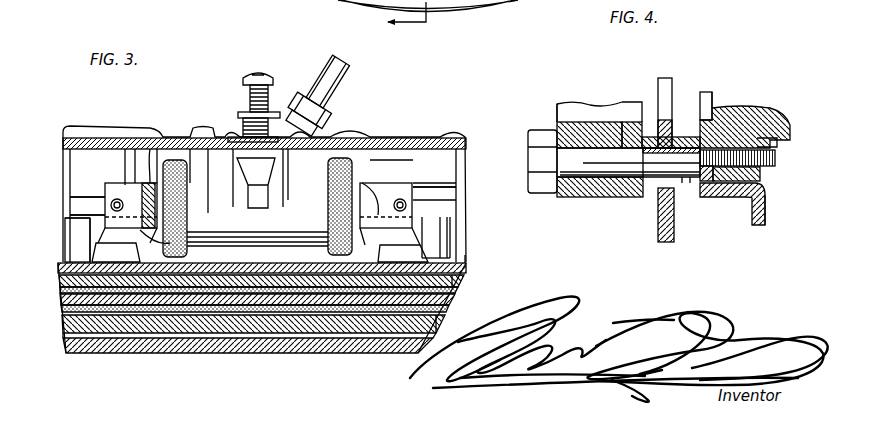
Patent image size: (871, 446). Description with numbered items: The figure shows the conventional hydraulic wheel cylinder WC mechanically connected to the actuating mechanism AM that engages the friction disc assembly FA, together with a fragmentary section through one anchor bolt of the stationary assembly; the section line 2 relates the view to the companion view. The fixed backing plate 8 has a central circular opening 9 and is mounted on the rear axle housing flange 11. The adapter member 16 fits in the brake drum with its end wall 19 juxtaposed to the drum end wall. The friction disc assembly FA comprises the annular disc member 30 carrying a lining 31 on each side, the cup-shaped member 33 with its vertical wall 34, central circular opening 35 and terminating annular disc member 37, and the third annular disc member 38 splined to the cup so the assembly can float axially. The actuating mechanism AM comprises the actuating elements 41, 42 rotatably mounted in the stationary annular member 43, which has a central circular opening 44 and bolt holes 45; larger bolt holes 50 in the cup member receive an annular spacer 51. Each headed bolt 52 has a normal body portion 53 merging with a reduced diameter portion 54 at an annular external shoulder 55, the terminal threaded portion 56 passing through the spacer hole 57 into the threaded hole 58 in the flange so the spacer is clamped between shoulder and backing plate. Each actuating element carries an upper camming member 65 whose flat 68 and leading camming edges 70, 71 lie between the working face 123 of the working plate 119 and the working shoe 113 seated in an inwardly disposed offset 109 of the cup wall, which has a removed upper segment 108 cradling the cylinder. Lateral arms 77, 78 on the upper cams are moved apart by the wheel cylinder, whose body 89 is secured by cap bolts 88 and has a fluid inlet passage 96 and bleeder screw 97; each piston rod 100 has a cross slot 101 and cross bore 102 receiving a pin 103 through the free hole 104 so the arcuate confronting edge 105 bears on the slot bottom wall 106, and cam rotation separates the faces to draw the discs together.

In FIG. 3, the section line 2 is at (399, 25).
In FIG. 3, the backing plate 8 is at (456, 132).
In FIG. 4, the backing plate 8 is at (766, 215).
In FIG. 4, the central circular opening 9 is at (706, 93).
In FIG. 4, the rear axle housing flange 11 is at (781, 141).
In FIG. 3, the adapter member 16 is at (243, 354).
In FIG. 3, the end wall 19 is at (186, 342).
In FIG. 3, the annular disc member 30 is at (268, 305).
In FIG. 3, the linings 31 is at (185, 300).
In FIG. 3, the cup-shaped member 33 is at (110, 340).
In FIG. 4, the cup-shaped member 33 is at (666, 245).
In FIG. 3, the vertical wall 34 is at (105, 188).
In FIG. 4, the vertical wall 34 is at (665, 78).
In FIG. 4, the central circular opening 35 is at (706, 92).
In FIG. 3, the terminating annular disc member 37 is at (64, 330).
In FIG. 3, the third annular disc member 38 is at (63, 280).
In FIG. 3, the actuating element 41 is at (88, 252).
In FIG. 3, the actuating element 42 is at (440, 240).
In FIG. 4, the stationary annular member 43 is at (555, 193).
In FIG. 4, the central circular opening 44 is at (560, 122).
In FIG. 4, the bolt holes 45 is at (572, 180).
In FIG. 4, the bolt holes 50 is at (622, 122).
In FIG. 4, the annular spacer 51 is at (652, 178).
In FIG. 4, the headed bolt 52 is at (540, 134).
In FIG. 4, the normal body portion 53 is at (608, 165).
In FIG. 4, the reduced diameter portion 54 is at (732, 198).
In FIG. 4, the annular external shoulder 55 is at (640, 178).
In FIG. 4, the terminal threaded portion 56 is at (778, 156).
In FIG. 4, the holes 57 is at (683, 183).
In FIG. 4, the threaded holes 58 is at (762, 178).
In FIG. 3, the upper camming member 65 is at (260, 252).
In FIG. 3, the flat 68 is at (425, 318).
In FIG. 3, the leading camming edge 70 is at (358, 250).
In FIG. 3, the leading camming edge 71 is at (443, 298).
In FIG. 3, the laterally extending arm 77 is at (105, 200).
In FIG. 3, the laterally extending arm 78 is at (430, 200).
In FIG. 3, the cap bolt 88 is at (308, 120).
In FIG. 3, the cylindrically bored body 89 is at (213, 183).
In FIG. 3, the fluid inlet passage 96 is at (337, 67).
In FIG. 3, the bleeder screw 97 is at (255, 85).
In FIG. 3, the piston rod 100 is at (151, 183).
In FIG. 3, the cross slot 101 is at (188, 216).
In FIG. 3, the cross bore 102 is at (116, 199).
In FIG. 3, the pin 103 is at (100, 203).
In FIG. 3, the free hole 104 is at (445, 180).
In FIG. 3, the arcuate confronting edge 105 is at (143, 195).
In FIG. 3, the bottom wall 106 is at (148, 228).
In FIG. 3, the removed upper segment 108 is at (283, 256).
In FIG. 3, the inwardly disposed offset 109 is at (73, 262).
In FIG. 3, the working shoe 113 is at (88, 233).
In FIG. 3, the working plate 119 is at (463, 272).
In FIG. 3, the working face 123 is at (452, 263).
In FIG. 3, the actuating mechanism AM is at (396, 178).
In FIG. 4, the actuating mechanism AM is at (588, 121).
In FIG. 3, the hydraulic wheel cylinder WC is at (256, 193).
In FIG. 3, the friction disc assembly FA is at (375, 339).